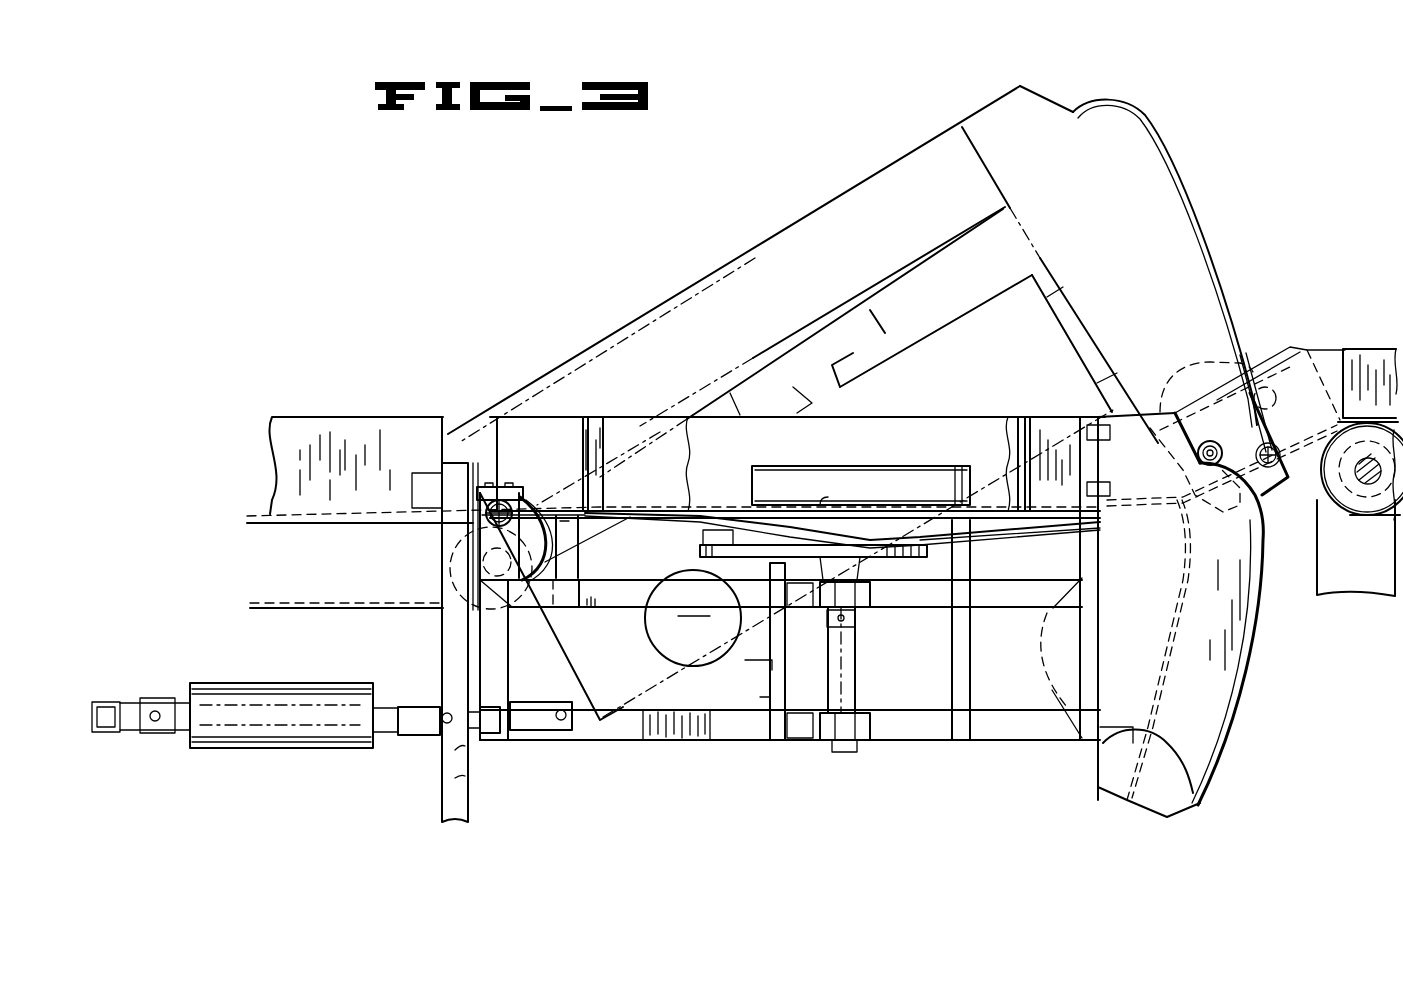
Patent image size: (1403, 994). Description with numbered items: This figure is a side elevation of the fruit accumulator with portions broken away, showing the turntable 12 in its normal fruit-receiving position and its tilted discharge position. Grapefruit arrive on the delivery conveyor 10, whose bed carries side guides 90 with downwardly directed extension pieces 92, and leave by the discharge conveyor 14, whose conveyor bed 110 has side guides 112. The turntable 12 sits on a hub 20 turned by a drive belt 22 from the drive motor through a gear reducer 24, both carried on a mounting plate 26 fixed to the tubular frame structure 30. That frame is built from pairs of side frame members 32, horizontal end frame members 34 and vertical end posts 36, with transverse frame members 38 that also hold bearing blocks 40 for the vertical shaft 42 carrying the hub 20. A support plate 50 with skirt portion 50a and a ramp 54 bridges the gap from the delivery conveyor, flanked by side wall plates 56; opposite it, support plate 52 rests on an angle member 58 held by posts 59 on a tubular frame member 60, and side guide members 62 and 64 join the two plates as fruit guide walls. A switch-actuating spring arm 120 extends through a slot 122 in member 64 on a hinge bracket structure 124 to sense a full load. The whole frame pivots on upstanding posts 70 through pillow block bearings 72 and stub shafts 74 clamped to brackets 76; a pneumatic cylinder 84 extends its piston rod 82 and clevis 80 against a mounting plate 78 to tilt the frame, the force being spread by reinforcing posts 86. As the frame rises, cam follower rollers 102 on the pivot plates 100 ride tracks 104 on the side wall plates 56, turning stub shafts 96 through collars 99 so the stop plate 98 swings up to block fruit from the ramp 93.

The delivery conveyor 10 is at (1378, 415).
The turntable 12 is at (907, 280).
The discharge conveyor 14 is at (272, 512).
The hub 20 is at (890, 556).
The drive belt 22 is at (930, 549).
The gear reducer 24 is at (738, 660).
The mounting plate 26 is at (778, 697).
The tubular frame structure 30 is at (640, 724).
The side frame members 32 is at (985, 608).
The end frame members 34 is at (1050, 658).
The end posts 36 is at (1082, 643).
The frame members 38 is at (800, 612).
The bearing blocks 40 is at (870, 592).
The shaft 42 is at (856, 660).
The support plate 50 is at (1135, 516).
The skirt portion 50a is at (1107, 792).
The support plate 52 is at (537, 511).
The ramp 54 is at (1156, 493).
The side wall plates 56 is at (990, 103).
The angle member 58 is at (585, 528).
The posts 59 is at (582, 562).
The tubular frame member 60 is at (596, 610).
The side guide member 62 is at (765, 243).
The side guide member 64 is at (902, 417).
The upstanding posts 70 is at (448, 781).
The pillow block bearing 72 is at (490, 472).
The stub shaft 74 is at (487, 515).
The bracket 76 is at (486, 548).
The mounting plate 78 is at (478, 742).
The clevis 80 is at (420, 736).
The piston rod 82 is at (443, 702).
The pneumatic cylinder 84 is at (266, 683).
The reinforcing posts 86 is at (740, 742).
The side guides 90 is at (1370, 351).
The extension piece 92 is at (1322, 350).
The ramp 93 is at (1312, 424).
The stub shaft 96 is at (1278, 484).
The stop plate 98 is at (1213, 400).
The collar 99 is at (1318, 430).
The pivot plate 100 is at (1238, 368).
The cam follower roller 102 is at (1309, 348).
The track 104 is at (1150, 112).
The conveyor bed 110 is at (290, 526).
The side guides 112 is at (352, 424).
The switch-actuating spring arm 120 is at (796, 470).
The slot 122 is at (846, 476).
The hinge bracket structure 124 is at (965, 530).